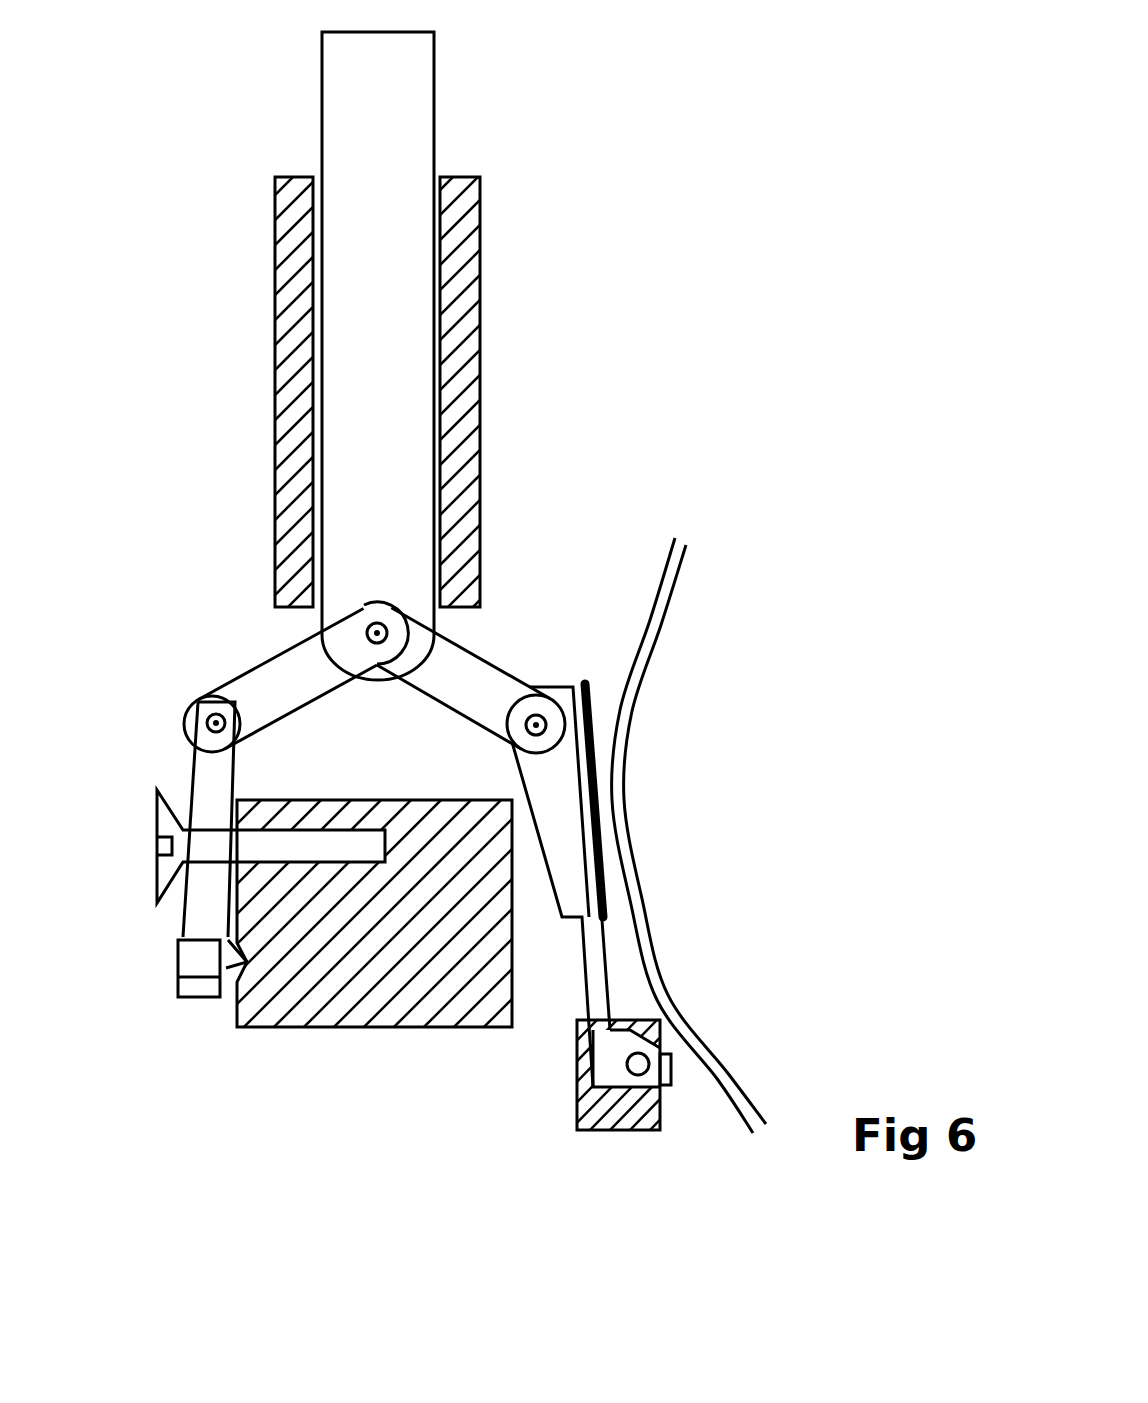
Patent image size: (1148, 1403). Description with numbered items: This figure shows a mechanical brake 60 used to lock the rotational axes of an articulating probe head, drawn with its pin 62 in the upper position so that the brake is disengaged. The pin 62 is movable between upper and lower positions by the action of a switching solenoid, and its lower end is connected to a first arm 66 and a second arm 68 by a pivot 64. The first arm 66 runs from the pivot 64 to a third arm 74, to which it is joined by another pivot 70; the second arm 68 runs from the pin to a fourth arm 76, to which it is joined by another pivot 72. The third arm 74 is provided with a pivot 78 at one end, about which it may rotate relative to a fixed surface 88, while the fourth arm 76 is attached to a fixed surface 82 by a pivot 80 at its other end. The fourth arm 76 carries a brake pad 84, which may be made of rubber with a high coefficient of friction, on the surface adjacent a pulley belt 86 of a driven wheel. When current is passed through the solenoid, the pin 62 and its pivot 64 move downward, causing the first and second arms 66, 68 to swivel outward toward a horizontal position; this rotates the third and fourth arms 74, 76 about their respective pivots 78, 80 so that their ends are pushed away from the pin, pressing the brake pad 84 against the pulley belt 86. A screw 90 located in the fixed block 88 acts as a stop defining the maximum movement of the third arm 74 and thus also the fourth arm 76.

The brake 60 is at (580, 255).
The pin 62 is at (375, 359).
The pivot 64 is at (367, 633).
The first arm 66 is at (262, 718).
The second arm 68 is at (460, 670).
The pivot 70 is at (207, 726).
The pivot 72 is at (537, 715).
The third arm 74 is at (217, 890).
The fourth arm 76 is at (593, 942).
The pivot 78 is at (221, 985).
The pivot 80 is at (638, 1064).
The fixed surface 82 is at (592, 1107).
The brake pad 84 is at (604, 766).
The pulley belt 86 is at (682, 563).
The fixed surface 88 is at (356, 983).
The screw 90 is at (157, 823).